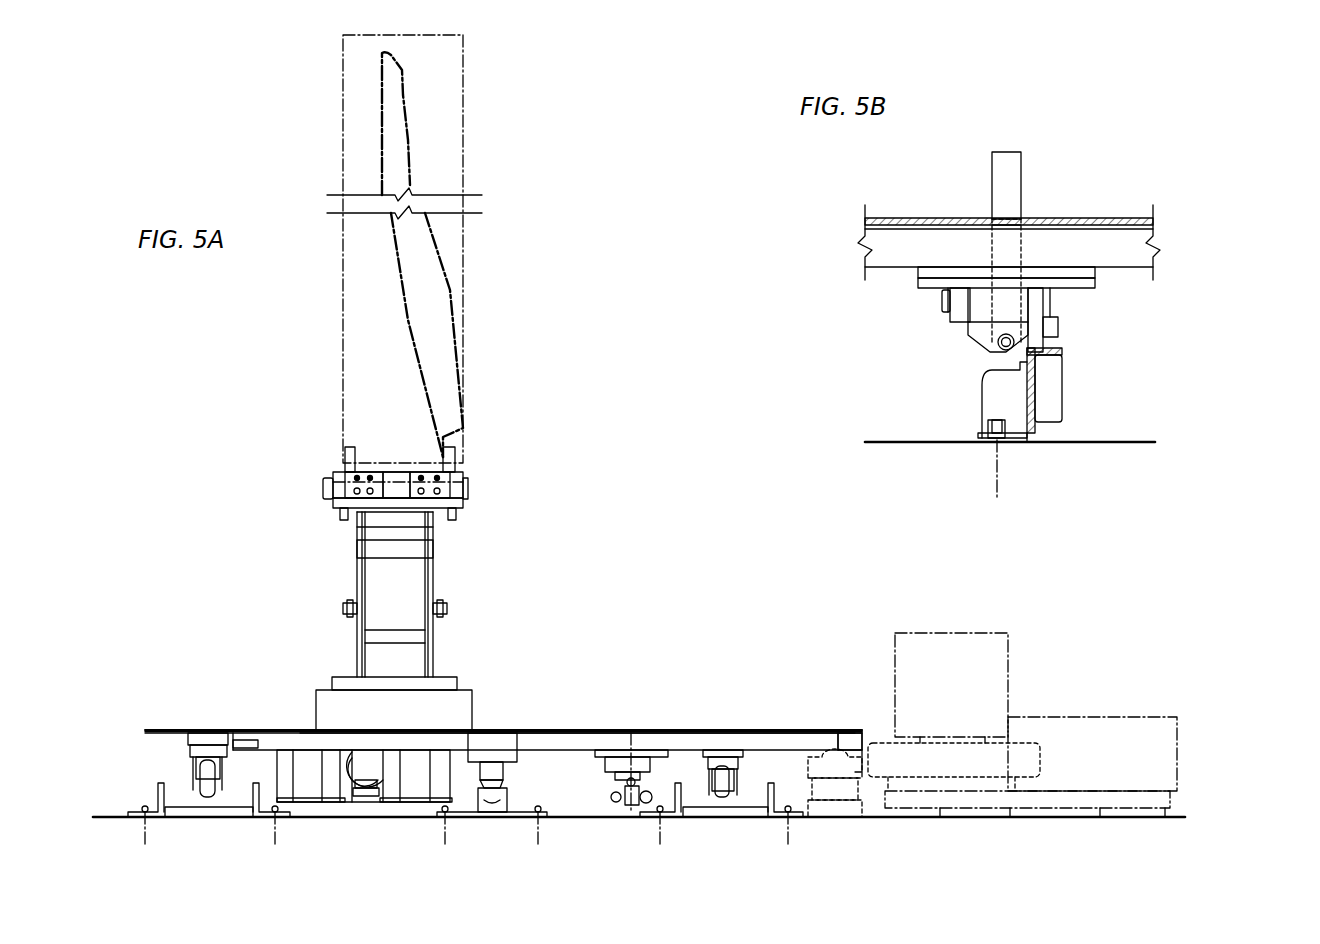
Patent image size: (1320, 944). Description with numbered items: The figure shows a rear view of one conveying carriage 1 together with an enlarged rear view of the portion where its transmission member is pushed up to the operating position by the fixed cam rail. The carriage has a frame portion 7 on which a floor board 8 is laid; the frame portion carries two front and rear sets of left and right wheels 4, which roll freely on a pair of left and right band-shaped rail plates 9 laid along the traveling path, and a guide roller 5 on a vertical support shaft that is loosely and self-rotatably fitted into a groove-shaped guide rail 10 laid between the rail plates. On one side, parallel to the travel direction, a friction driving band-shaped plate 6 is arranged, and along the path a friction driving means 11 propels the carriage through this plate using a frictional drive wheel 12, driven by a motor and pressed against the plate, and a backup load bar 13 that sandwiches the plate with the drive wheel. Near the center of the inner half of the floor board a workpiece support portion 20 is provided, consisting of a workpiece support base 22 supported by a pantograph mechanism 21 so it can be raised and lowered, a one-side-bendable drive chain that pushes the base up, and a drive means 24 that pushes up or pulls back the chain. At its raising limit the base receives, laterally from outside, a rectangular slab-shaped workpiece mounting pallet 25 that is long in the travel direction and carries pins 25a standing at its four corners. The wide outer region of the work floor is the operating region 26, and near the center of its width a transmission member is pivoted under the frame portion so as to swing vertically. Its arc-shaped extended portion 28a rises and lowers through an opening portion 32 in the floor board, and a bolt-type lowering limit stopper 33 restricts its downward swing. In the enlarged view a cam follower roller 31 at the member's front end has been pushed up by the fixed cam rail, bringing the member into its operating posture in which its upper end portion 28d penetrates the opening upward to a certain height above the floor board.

In FIG. 5A, the conveying carriage 1 is at (270, 726).
In FIG. 5A, the workpiece support portion 20 is at (314, 488).
In FIG. 5A, the workpiece mounting pallet 25 is at (384, 460).
In FIG. 5A, the pins 25a is at (345, 458).
In FIG. 5A, the workpiece support base 22 is at (460, 503).
In FIG. 5A, the pantograph mechanism 21 is at (438, 576).
In FIG. 5A, the floor board 8 is at (503, 730).
In FIG. 5B, the floor board 8 is at (1112, 220).
In FIG. 5A, the frame portion 7 is at (662, 735).
In FIG. 5B, the frame portion 7 is at (1124, 270).
In FIG. 5A, the operating region 26 is at (710, 726).
In FIG. 5A, the wheels 4 is at (208, 800).
In FIG. 5A, the band-shaped rail plates 9 is at (232, 812).
In FIG. 5A, the drive means 24 is at (362, 800).
In FIG. 5A, the guide roller 5 is at (493, 808).
In FIG. 5A, the groove-shaped guide rail 10 is at (515, 795).
In FIG. 5A, the cam follower roller 31 is at (646, 805).
In FIG. 5B, the cam follower roller 31 is at (1045, 335).
In FIG. 5A, the backup load bar 13 is at (835, 770).
In FIG. 5A, the friction driving band-shaped plate 6 is at (863, 763).
In FIG. 5A, the frictional drive wheel 12 is at (910, 763).
In FIG. 5A, the friction driving means 11 is at (990, 684).
In FIG. 5B, the upper end portion 28d is at (1008, 165).
In FIG. 5B, the arc-shaped extended portion 28a is at (1010, 252).
In FIG. 5B, the opening portion 32 is at (1005, 222).
In FIG. 5B, the lowering limit stopper 33 is at (1000, 355).